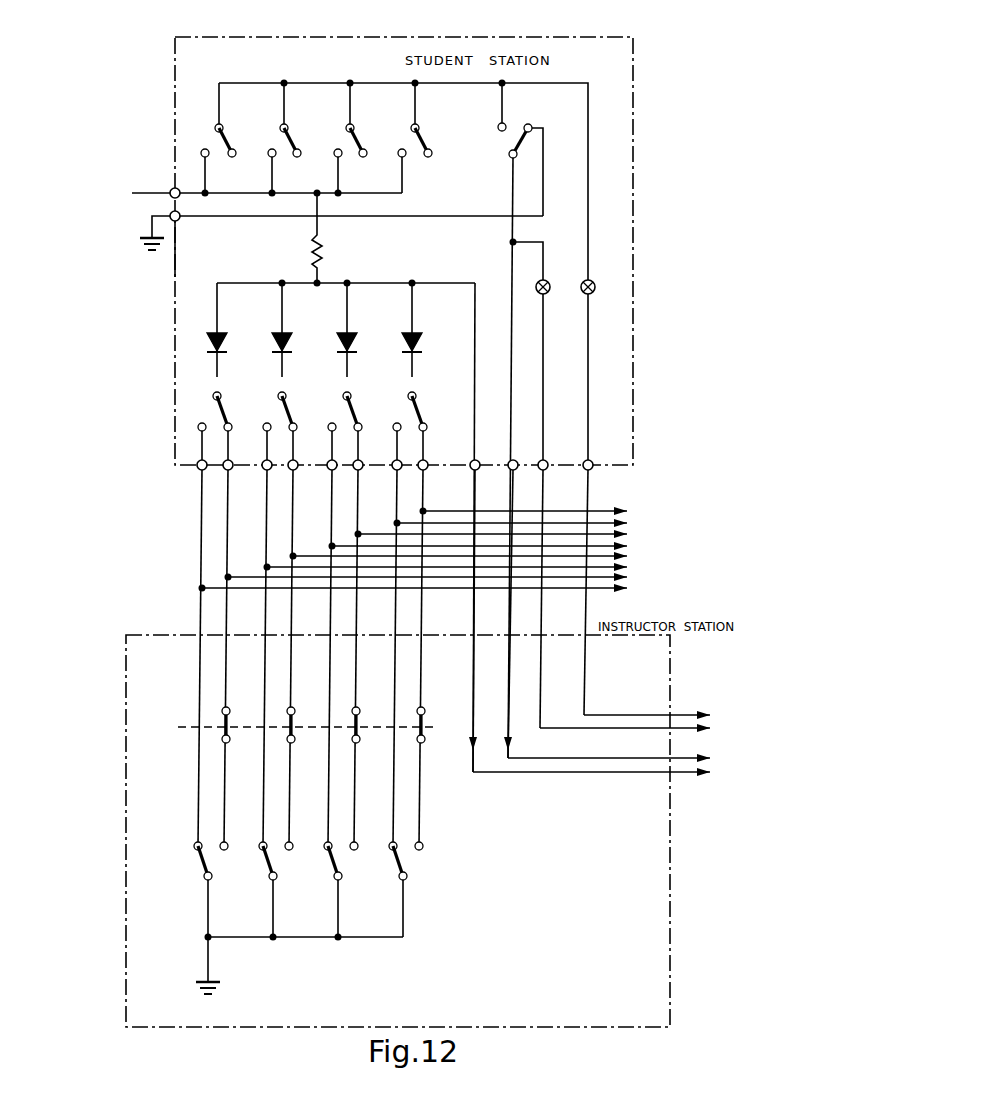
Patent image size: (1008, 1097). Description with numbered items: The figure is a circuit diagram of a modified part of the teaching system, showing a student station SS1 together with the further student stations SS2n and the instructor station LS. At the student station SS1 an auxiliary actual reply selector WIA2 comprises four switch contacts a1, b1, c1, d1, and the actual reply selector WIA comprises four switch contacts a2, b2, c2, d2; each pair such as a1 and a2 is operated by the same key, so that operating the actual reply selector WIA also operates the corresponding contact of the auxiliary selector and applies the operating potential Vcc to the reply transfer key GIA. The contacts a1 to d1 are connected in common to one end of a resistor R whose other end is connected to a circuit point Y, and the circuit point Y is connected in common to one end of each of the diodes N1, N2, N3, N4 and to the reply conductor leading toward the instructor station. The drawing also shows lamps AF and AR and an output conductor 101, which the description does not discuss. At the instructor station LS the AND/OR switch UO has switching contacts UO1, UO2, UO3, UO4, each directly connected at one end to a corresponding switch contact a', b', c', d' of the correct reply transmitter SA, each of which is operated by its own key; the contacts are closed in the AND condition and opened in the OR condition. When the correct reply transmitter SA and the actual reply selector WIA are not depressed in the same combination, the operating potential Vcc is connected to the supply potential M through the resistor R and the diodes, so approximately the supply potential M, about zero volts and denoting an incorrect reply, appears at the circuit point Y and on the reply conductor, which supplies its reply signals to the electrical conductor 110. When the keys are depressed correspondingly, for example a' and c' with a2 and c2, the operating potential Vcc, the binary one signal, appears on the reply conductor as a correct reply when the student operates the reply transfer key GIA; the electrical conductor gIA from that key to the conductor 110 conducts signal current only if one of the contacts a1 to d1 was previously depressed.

The student station SS1 is at (578, 63).
The operating potential Vcc is at (128, 157).
The supply potential M is at (129, 265).
The switch contact of auxiliary actual reply selector a1 is at (207, 138).
The switch contact of auxiliary actual reply selector b1 is at (272, 138).
The switch contact of auxiliary actual reply selector c1 is at (338, 138).
The switch contact of auxiliary actual reply selector d1 is at (402, 138).
The auxiliary actual reply selector WIA2 is at (444, 150).
The reply transfer key GIA is at (517, 128).
The resistor R is at (322, 248).
The circuit point Y is at (317, 287).
The false indicator lamp AF is at (548, 293).
The right indicator lamp AR is at (593, 293).
The diode N1 is at (232, 321).
The diode N2 is at (297, 321).
The diode N3 is at (362, 321).
The diode N4 is at (427, 321).
The switch contact of actual reply selector a2 is at (205, 428).
The switch contact of actual reply selector b2 is at (269, 428).
The switch contact of actual reply selector c2 is at (334, 428).
The switch contact of actual reply selector d2 is at (398, 428).
The actual reply selector WIA is at (475, 290).
The student stations SS2n is at (635, 512).
The instructor station LS is at (623, 674).
The output lines 101 is at (618, 727).
The electrical conductor 110 is at (606, 772).
The electrical conductor gIA is at (508, 673).
The AND/OR switch UO is at (180, 727).
The switching contact of AND/OR switch UO1 is at (230, 733).
The switching contact of AND/OR switch UO2 is at (295, 733).
The switching contact of AND/OR switch UO3 is at (360, 733).
The switching contact of AND/OR switch UO4 is at (425, 733).
The switch contact of correct reply transmitter a' is at (212, 889).
The switch contact of correct reply transmitter b' is at (278, 889).
The switch contact of correct reply transmitter c' is at (342, 889).
The switch contact of correct reply transmitter d' is at (408, 889).
The correct reply transmitter SA is at (367, 918).